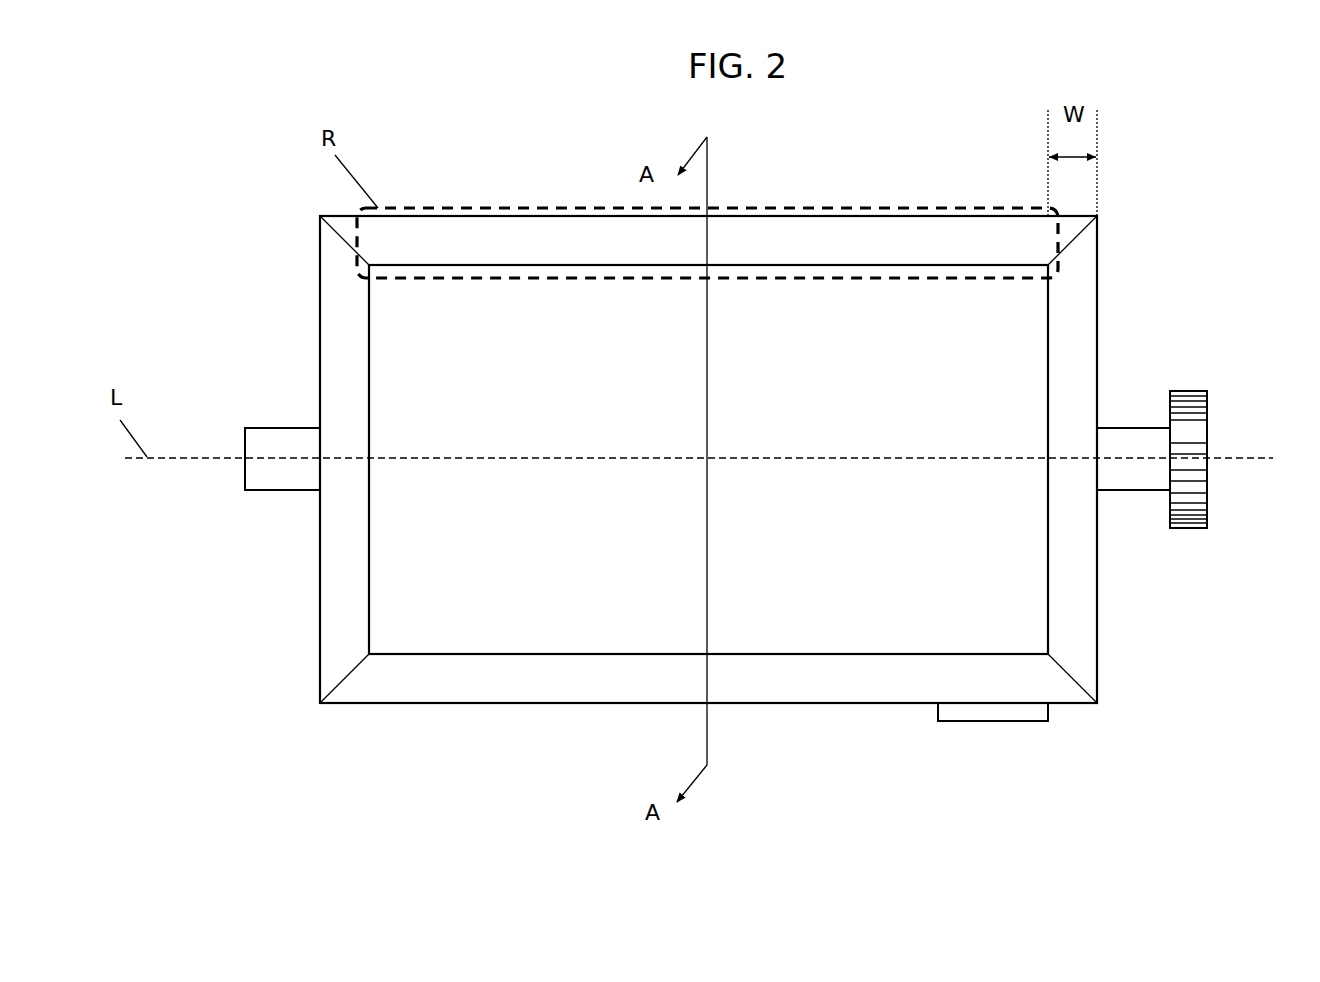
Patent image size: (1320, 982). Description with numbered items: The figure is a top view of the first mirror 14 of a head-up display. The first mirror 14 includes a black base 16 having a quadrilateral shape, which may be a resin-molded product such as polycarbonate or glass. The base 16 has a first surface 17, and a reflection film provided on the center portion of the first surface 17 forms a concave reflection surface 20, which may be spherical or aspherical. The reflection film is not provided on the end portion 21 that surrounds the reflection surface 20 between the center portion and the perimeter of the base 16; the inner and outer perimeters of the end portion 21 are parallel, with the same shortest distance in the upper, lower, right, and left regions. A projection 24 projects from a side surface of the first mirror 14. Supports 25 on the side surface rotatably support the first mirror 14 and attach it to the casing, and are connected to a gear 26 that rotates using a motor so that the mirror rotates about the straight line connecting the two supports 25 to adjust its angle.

The first mirror 14 is at (1186, 98).
The base 16 is at (532, 703).
The first surface 17 is at (808, 707).
The reflection surface 20 is at (418, 640).
The end portion 21 is at (1082, 593).
The projection 24 is at (1027, 722).
The supports 25 is at (263, 428).
The gear 26 is at (1207, 437).